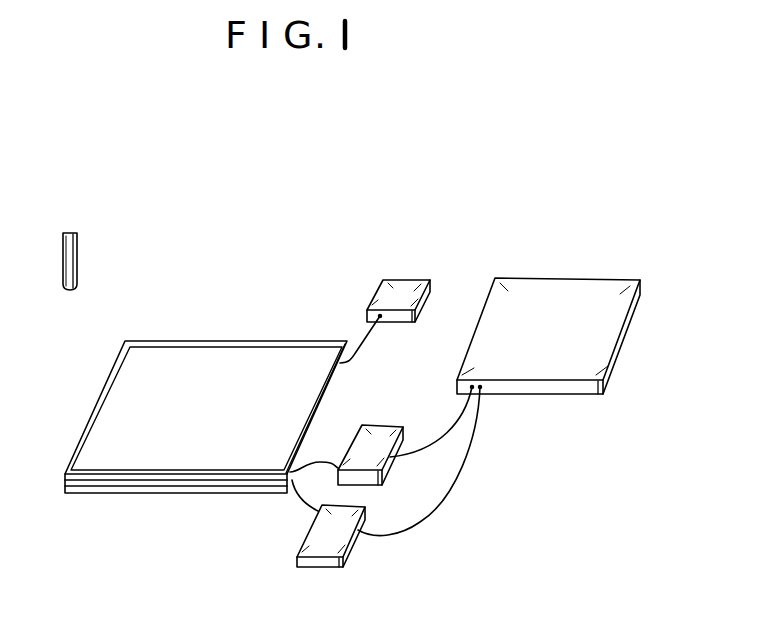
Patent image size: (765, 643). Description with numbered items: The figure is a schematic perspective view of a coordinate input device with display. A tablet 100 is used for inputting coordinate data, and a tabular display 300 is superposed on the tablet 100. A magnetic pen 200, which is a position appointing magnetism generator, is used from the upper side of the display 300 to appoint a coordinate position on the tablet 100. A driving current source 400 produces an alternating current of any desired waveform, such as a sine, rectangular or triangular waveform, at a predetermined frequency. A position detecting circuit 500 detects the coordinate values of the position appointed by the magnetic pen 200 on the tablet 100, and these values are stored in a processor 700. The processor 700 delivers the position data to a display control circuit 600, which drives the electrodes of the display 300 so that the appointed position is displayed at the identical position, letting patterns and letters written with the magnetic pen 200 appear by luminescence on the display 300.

The tablet 100 is at (137, 490).
The magnetic pen 200 is at (80, 250).
The tabular display 300 is at (113, 410).
The driving current source 400 is at (412, 288).
The position detecting circuit 500 is at (323, 542).
The display control circuit 600 is at (378, 437).
The processor 700 is at (597, 295).